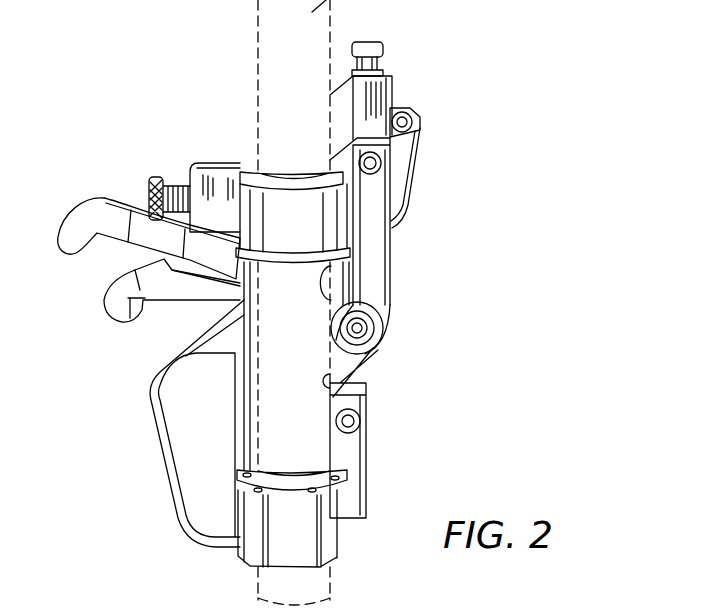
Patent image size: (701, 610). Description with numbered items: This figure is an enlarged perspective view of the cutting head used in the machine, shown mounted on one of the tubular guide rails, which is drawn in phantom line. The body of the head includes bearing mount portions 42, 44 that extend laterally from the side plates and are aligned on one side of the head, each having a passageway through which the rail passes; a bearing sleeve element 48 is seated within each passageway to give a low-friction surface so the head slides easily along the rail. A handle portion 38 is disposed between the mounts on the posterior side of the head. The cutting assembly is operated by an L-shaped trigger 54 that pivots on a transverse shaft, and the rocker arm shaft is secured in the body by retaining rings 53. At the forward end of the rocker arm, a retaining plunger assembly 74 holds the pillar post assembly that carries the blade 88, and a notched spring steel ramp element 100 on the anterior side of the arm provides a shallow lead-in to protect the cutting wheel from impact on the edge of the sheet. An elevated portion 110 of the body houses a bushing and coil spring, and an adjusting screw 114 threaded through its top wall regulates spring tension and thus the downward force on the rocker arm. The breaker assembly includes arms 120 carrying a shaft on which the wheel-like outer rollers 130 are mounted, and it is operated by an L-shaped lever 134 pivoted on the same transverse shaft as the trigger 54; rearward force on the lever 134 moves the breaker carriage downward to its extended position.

The handle portion 38 is at (178, 497).
The bearing mount portion 42 is at (289, 186).
The bearing mount portion 44 is at (247, 555).
The bearing sleeve element 48 is at (287, 259).
The retaining rings 53 is at (376, 323).
The trigger 54 is at (129, 324).
The retaining plunger assembly 74 is at (391, 49).
The blade 88 is at (416, 112).
The ramp element 100 is at (408, 175).
The elevated portion 110 is at (213, 195).
The adjusting screw 114 is at (160, 192).
The arms 120 is at (373, 260).
The outer rollers 130 is at (385, 342).
The lever 134 is at (73, 256).